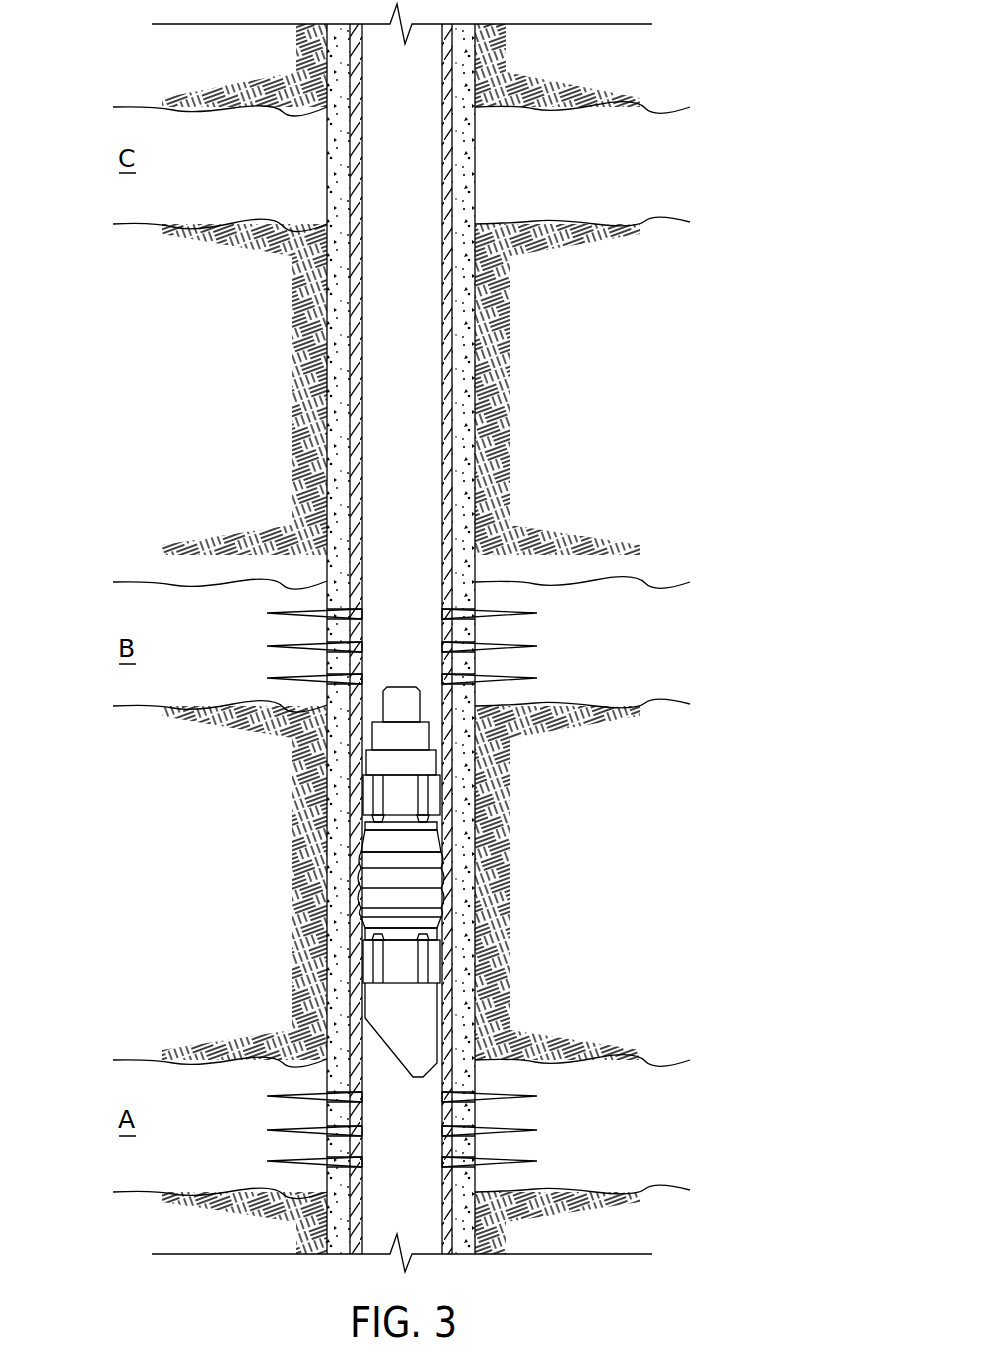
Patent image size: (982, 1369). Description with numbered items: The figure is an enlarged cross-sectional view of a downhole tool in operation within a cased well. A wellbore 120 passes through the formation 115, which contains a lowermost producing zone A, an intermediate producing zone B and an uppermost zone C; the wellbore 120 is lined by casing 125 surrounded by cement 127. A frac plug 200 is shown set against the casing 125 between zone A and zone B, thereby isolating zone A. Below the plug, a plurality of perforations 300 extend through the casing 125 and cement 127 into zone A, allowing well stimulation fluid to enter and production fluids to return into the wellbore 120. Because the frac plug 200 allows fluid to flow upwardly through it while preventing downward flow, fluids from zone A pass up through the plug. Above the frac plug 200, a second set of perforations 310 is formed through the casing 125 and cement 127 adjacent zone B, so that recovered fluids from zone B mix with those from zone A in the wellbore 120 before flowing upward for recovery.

The formation 115 is at (565, 255).
The wellbore 120 is at (419, 163).
The casing 125 is at (443, 457).
The cement 127 is at (465, 338).
The frac plug 200 is at (412, 880).
The perforations 300 is at (267, 1161).
The perforations 310 is at (267, 678).